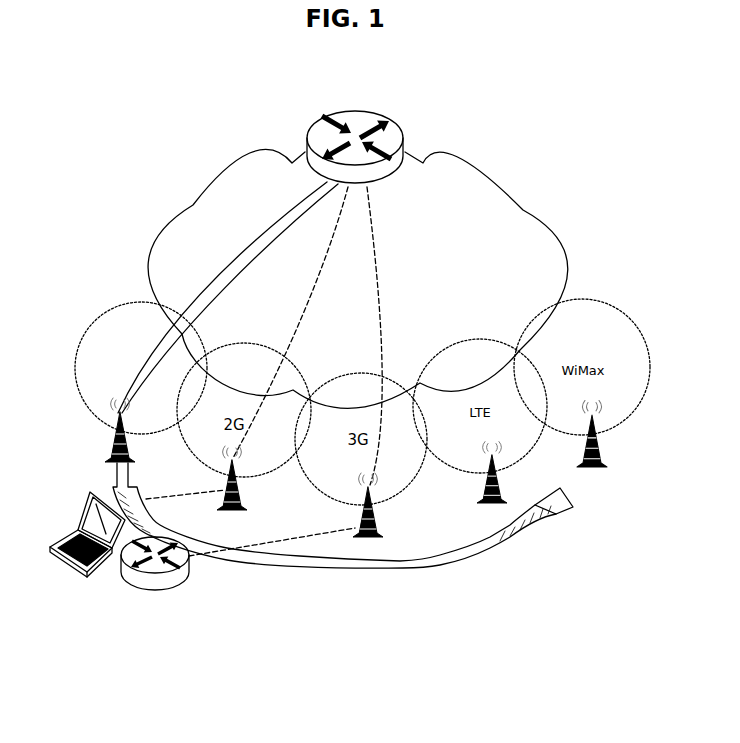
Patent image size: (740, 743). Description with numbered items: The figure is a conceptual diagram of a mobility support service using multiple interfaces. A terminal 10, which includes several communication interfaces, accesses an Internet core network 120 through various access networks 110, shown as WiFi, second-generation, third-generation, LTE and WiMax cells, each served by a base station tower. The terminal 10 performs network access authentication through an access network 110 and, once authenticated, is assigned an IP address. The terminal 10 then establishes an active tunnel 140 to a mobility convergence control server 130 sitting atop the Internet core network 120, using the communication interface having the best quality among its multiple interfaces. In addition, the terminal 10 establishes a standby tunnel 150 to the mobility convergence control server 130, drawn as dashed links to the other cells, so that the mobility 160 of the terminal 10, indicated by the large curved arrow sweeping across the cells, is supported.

The terminal 10 is at (155, 590).
The access network 110 is at (100, 322).
The Internet core network 120 is at (568, 265).
The mobility convergence control server 130 is at (407, 137).
The active tunnel 140 is at (270, 228).
The standby tunnel 150 is at (307, 310).
The mobility 160 is at (545, 525).